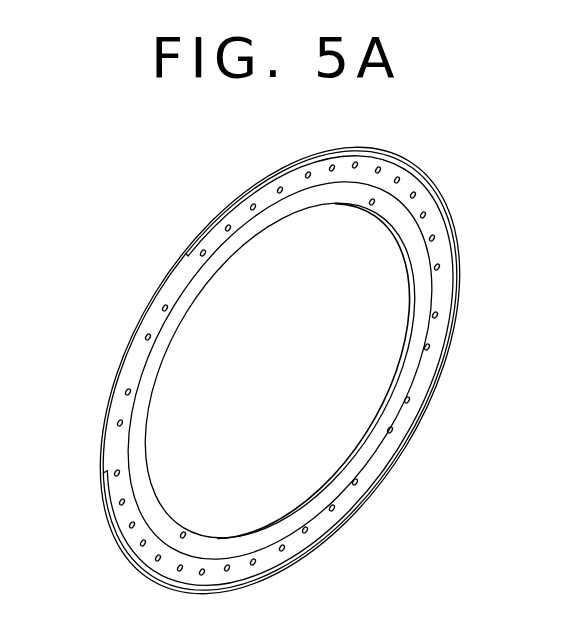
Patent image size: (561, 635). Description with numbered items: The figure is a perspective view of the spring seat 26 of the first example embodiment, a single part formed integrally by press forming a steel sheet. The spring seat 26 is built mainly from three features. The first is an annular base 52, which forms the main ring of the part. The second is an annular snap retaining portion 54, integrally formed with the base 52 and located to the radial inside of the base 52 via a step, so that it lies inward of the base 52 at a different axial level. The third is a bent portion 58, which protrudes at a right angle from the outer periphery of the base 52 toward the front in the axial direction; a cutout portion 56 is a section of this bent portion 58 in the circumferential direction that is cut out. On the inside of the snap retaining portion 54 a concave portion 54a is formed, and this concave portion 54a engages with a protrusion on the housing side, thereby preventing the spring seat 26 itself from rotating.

The spring seat 26 is at (119, 218).
The annular base 52 is at (437, 252).
The annular snap retaining portion 54 is at (407, 329).
The concave portion 54a is at (371, 205).
The cutout portion 56 is at (131, 352).
The bent portion 58 is at (238, 214).